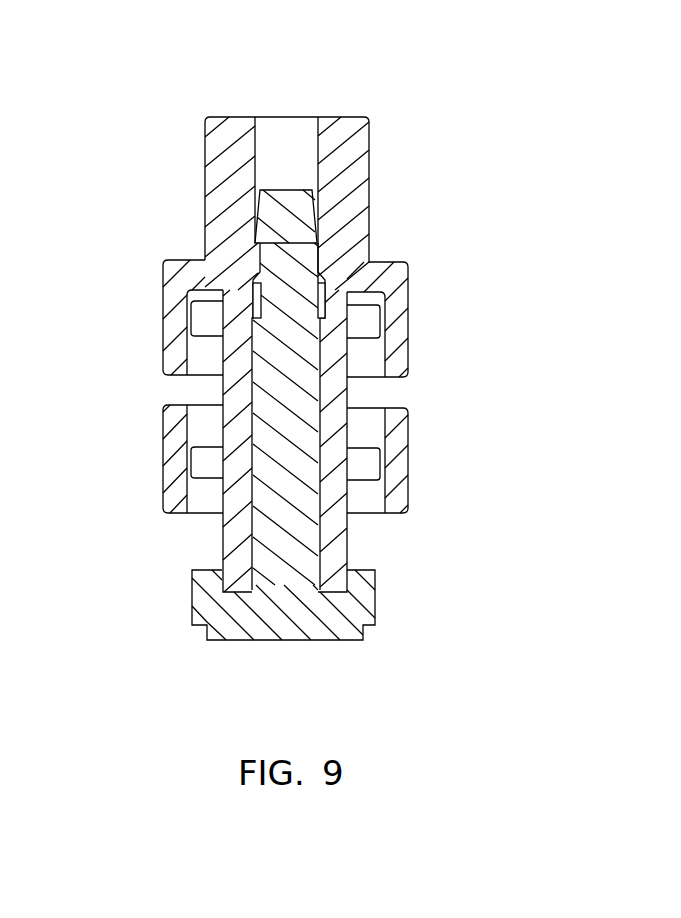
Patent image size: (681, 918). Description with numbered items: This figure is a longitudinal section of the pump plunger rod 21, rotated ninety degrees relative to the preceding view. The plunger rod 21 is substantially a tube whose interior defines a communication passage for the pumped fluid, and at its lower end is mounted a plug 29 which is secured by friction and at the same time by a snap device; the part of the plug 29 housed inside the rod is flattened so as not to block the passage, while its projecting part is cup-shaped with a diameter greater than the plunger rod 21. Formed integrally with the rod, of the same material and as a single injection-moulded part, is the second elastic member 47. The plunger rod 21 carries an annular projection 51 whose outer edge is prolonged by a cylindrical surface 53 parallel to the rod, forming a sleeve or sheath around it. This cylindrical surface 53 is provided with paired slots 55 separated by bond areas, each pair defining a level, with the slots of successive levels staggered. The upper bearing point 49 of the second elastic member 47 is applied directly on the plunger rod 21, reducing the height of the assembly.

The pump plunger rod 21 is at (340, 480).
The plug 29 is at (282, 483).
The second elastic member 47 is at (403, 317).
The upper bearing point 49 is at (175, 273).
The annular projection 51 is at (182, 270).
The cylindrical surface 53 is at (173, 320).
The slots 55 is at (367, 462).